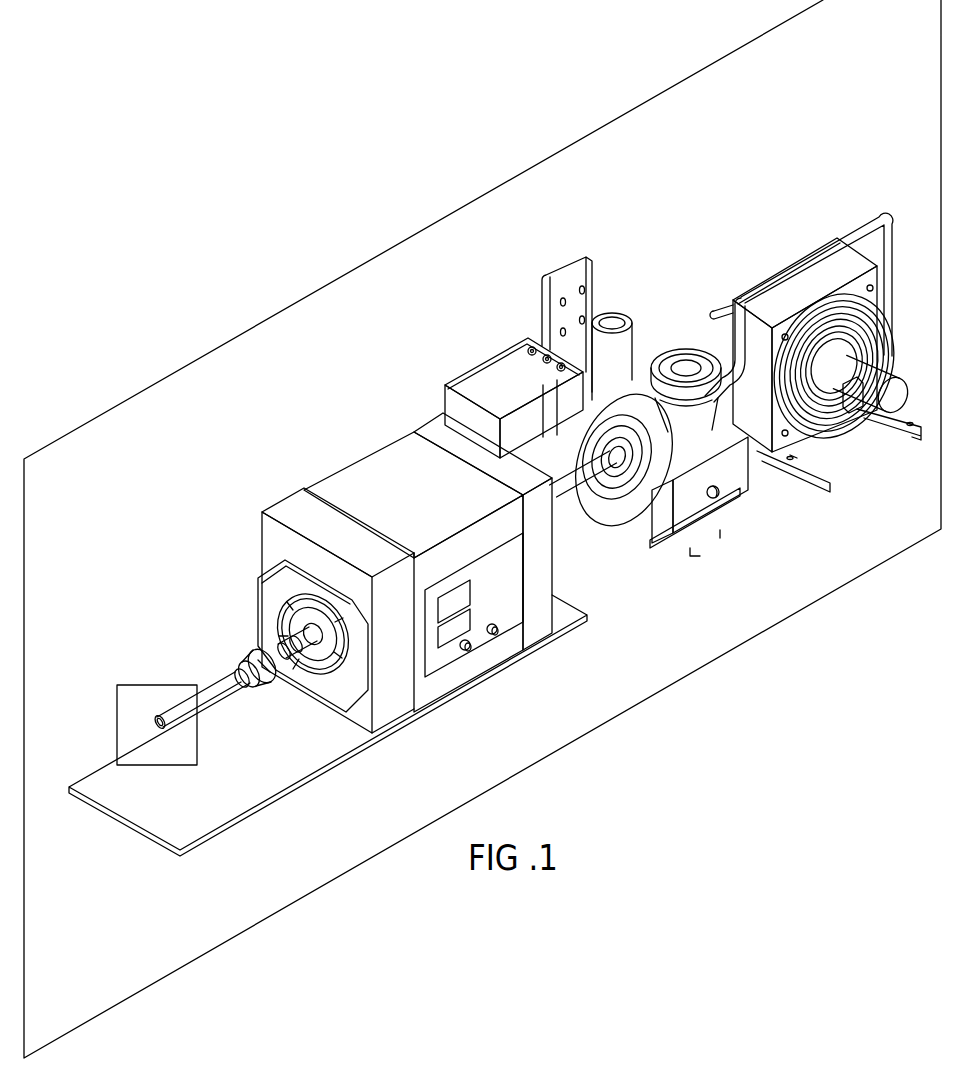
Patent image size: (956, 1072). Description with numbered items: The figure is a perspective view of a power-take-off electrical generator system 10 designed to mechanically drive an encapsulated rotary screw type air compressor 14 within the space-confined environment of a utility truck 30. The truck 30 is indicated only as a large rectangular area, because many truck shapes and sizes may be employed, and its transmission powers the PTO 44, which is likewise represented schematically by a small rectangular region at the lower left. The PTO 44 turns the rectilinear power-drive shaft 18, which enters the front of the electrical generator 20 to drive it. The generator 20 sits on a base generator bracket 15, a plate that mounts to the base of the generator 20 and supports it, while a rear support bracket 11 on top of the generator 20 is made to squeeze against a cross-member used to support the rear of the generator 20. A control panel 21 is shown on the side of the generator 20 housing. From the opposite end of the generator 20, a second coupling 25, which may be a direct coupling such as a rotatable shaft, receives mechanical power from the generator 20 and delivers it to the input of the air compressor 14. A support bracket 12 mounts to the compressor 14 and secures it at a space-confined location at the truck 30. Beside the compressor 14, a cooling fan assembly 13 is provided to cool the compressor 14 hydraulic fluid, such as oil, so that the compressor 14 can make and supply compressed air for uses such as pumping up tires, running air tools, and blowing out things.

The power-take-off electrical generator system 10 is at (266, 260).
The rear support bracket 11 is at (485, 387).
The support bracket 12 is at (548, 325).
The cooling fan assembly 13 is at (772, 444).
The encapsulated rotary screw type air compressor 14 is at (643, 507).
The base generator bracket 15 is at (253, 773).
The rectilinear power-drive shaft 18 is at (225, 688).
The electrical generator 20 is at (352, 490).
The control panel 21 is at (490, 658).
The second coupling 25 is at (578, 505).
The utility truck 30 is at (575, 142).
The power-take-off (PTO) 44 is at (132, 697).